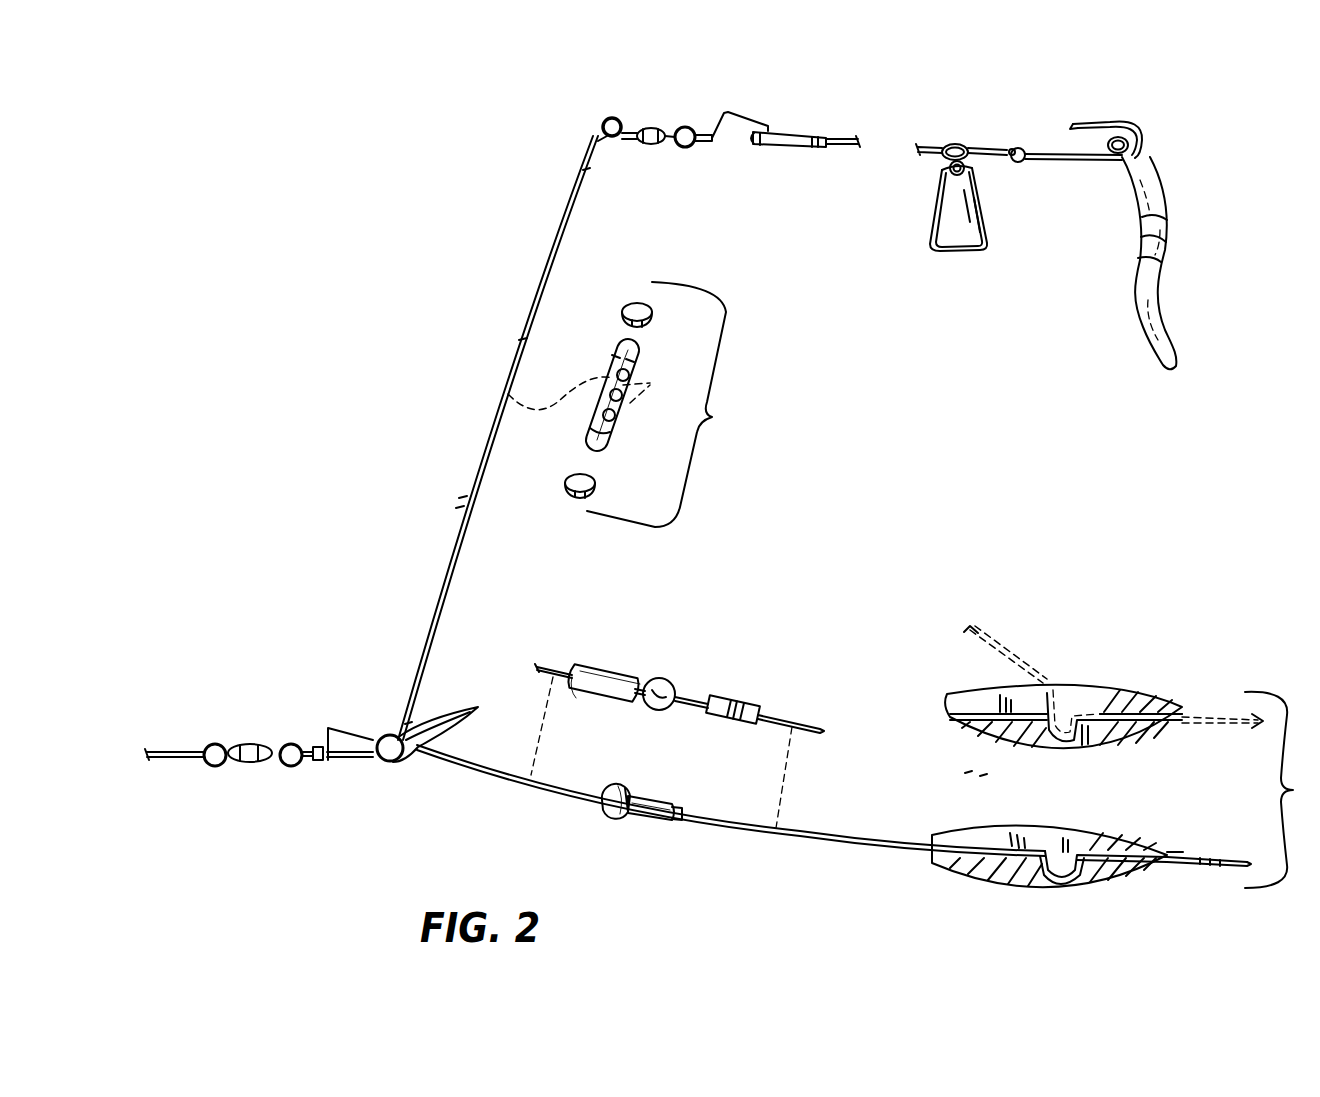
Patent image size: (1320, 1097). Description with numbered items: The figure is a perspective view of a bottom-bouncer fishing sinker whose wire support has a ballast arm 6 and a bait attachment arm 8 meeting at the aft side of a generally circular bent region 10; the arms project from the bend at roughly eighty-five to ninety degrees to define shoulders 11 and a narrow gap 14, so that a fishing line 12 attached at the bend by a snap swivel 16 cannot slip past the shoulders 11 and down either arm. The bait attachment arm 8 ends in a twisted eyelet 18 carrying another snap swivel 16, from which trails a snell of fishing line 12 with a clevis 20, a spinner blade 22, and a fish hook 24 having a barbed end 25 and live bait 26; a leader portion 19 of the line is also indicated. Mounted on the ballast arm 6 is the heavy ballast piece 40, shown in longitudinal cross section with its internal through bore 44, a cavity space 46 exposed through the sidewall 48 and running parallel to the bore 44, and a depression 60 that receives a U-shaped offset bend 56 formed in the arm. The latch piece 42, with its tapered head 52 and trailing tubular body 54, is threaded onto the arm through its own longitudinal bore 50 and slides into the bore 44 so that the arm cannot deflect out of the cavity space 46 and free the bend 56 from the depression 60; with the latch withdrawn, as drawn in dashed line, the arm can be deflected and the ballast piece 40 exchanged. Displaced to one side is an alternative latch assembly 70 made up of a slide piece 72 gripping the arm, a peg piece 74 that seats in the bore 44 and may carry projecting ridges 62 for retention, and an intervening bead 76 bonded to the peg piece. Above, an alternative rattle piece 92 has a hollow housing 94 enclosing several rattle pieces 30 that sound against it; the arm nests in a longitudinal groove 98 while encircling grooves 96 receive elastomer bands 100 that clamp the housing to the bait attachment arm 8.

The ballast arm 6 is at (790, 706).
The bait attachment arm 8 is at (448, 506).
The bent region 10 is at (381, 740).
The shoulders 11 is at (479, 708).
The fishing line 12 is at (851, 134).
The narrow gap 14 is at (400, 738).
The snap swivel 16 is at (648, 124).
The twisted eyelet 18 is at (606, 117).
The snap 19 is at (823, 126).
The clevis 20 is at (954, 145).
The spinner blade 22 is at (930, 236).
The fish hook 24 is at (1143, 127).
The barbed end 25 is at (1073, 125).
The live bait 26 is at (1135, 243).
The rattle pieces 30 is at (644, 380).
The ballast piece 40 is at (1060, 782).
The latch piece 42 is at (632, 836).
The longitudinal through bore 44 is at (1183, 703).
The cavity space 46 is at (987, 700).
The sidewall 48 is at (1030, 826).
The longitudinal bore 50 is at (682, 818).
The tapered head 52 is at (622, 818).
The tubular body 54 is at (652, 825).
The offset bend 56 is at (1068, 682).
The depression 60 is at (1070, 741).
The projecting ridges 62 is at (745, 726).
The alternative latch assembly 70 is at (677, 704).
The slide piece 72 is at (583, 667).
The peg piece 74 is at (741, 710).
The bead 76 is at (670, 685).
The rattle piece 92 is at (659, 404).
The hollow housing 94 is at (614, 378).
The grooves 96 is at (616, 358).
The longitudinal groove 98 is at (599, 436).
The elastomer bands 100 is at (627, 305).